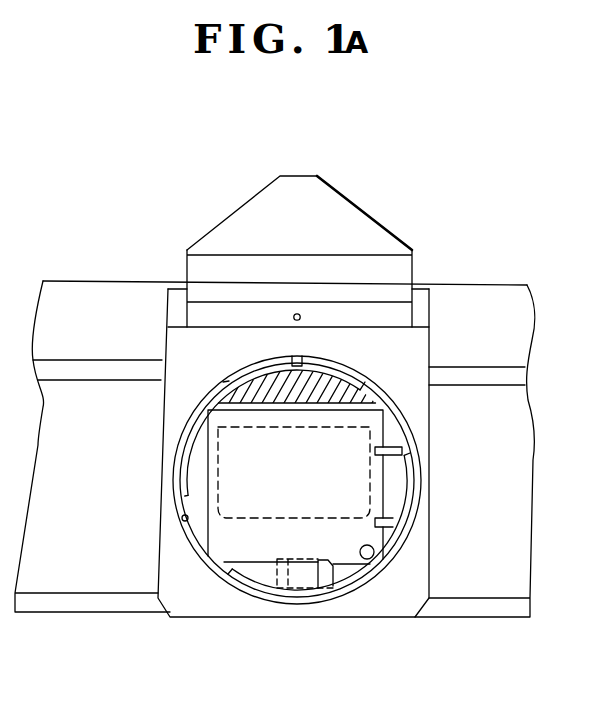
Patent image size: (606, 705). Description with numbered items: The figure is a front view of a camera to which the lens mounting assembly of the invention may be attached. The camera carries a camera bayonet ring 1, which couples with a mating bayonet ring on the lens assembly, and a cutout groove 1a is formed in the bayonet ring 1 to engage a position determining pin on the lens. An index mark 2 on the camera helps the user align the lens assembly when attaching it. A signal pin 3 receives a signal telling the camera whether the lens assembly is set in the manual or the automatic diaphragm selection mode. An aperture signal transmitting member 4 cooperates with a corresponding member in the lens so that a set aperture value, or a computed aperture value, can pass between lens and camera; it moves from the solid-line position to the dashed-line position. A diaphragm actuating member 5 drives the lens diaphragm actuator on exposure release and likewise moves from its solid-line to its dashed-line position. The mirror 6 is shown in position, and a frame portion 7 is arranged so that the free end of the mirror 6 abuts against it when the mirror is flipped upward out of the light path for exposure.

The camera bayonet ring 1 is at (207, 555).
The cutout groove 1a is at (297, 356).
The index mark 2 is at (299, 314).
The signal pin 3 is at (182, 520).
The aperture signal transmitting member 4 is at (402, 450).
The diaphragm actuating member 5 is at (325, 578).
The mirror 6 is at (263, 507).
The frame portion 7 is at (247, 385).